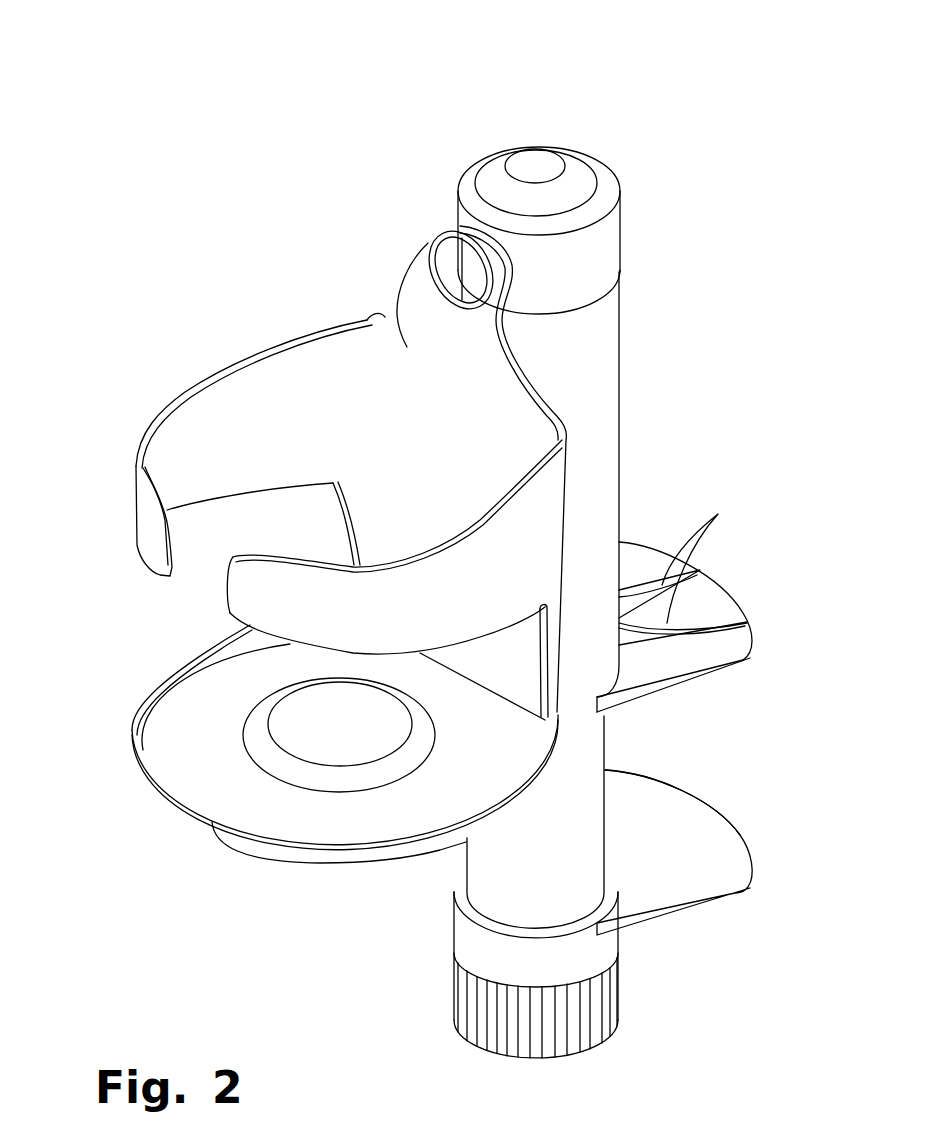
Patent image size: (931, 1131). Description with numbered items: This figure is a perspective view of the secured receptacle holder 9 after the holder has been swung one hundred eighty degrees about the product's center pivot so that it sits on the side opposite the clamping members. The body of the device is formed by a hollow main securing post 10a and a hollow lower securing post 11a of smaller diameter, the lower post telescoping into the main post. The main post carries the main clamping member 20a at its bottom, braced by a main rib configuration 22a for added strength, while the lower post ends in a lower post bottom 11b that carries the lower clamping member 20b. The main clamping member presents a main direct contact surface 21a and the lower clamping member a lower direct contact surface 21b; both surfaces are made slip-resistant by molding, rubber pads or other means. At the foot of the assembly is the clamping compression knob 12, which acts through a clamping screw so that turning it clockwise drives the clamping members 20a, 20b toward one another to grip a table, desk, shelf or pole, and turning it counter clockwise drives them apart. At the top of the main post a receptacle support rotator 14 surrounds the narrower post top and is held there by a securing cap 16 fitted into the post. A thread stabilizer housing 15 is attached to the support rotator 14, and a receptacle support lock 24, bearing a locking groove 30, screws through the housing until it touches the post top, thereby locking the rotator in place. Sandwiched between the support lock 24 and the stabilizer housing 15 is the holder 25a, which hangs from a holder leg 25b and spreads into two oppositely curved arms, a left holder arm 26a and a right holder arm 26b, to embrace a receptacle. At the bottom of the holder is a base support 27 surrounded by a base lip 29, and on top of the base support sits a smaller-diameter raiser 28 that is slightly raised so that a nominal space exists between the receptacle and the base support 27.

The secured receptacle holder 9 is at (647, 142).
The main securing post 10a is at (622, 410).
The lower securing post 11a is at (463, 867).
The lower post bottom 11b is at (452, 927).
The clamping compression knob 12 is at (620, 980).
The receptacle support rotator 14 is at (608, 252).
The thread stabilizer housing 15 is at (458, 200).
The securing cap 16 is at (500, 165).
The main clamping member 20a is at (748, 657).
The lower clamping member 20b is at (753, 877).
The main direct contact surface 21a is at (695, 692).
The lower direct contact surface 21b is at (688, 843).
The main rib configuration 22a is at (718, 514).
The receptacle support lock 24 is at (450, 263).
The holder 25a is at (197, 337).
The holder leg 25b is at (407, 345).
The left holder arm 26a is at (135, 437).
The right holder arm 26b is at (473, 535).
The base support 27 is at (210, 783).
The raiser 28 is at (270, 725).
The base lip 29 is at (210, 833).
The locking groove 30 is at (462, 280).